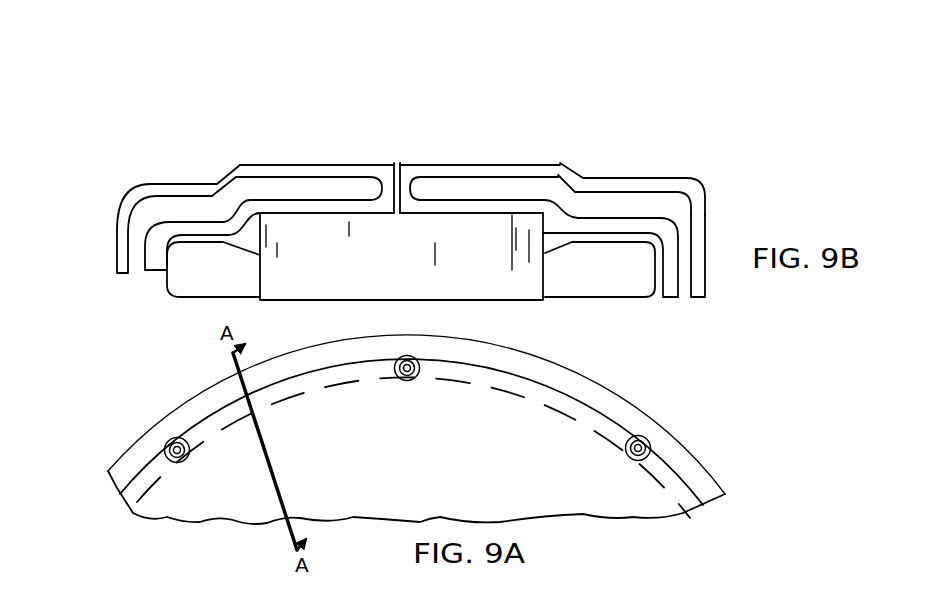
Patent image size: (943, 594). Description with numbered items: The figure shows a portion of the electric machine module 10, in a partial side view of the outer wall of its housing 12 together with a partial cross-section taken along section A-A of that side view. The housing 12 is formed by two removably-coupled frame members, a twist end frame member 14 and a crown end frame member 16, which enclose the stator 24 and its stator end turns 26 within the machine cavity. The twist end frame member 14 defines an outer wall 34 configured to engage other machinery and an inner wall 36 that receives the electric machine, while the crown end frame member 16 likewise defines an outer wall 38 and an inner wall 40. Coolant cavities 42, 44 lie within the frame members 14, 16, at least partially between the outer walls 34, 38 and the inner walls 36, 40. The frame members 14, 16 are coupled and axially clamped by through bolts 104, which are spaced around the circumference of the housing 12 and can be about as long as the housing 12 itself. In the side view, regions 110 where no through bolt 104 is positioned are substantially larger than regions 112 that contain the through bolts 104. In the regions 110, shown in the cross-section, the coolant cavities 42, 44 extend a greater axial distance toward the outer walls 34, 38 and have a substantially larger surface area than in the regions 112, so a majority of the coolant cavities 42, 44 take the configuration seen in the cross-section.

In FIG. 9B, the electric machine module 10 is at (498, 110).
In FIG. 9B, the housing 12 is at (513, 160).
In FIG. 9A, the housing 12 is at (627, 382).
In FIG. 9B, the twist end frame member 14 is at (130, 207).
In FIG. 9B, the crown end frame member 16 is at (707, 222).
In FIG. 9A, the crown end frame member 16 is at (232, 502).
In FIG. 9B, the stator 24 is at (390, 237).
In FIG. 9B, the stator end turns 26 is at (192, 272).
In FIG. 9B, the outer wall 34 is at (115, 245).
In FIG. 9B, the inner wall 36 is at (262, 222).
In FIG. 9B, the outer wall 38 is at (693, 190).
In FIG. 9B, the inner wall 40 is at (548, 223).
In FIG. 9B, the coolant cavity 42 is at (220, 210).
In FIG. 9B, the coolant cavity 44 is at (630, 203).
In FIG. 9A, the through bolt 104 is at (627, 453).
In FIG. 9B, the regions 110 is at (340, 152).
In FIG. 9A, the regions 110 is at (283, 395).
In FIG. 9A, the regions 112 is at (168, 443).